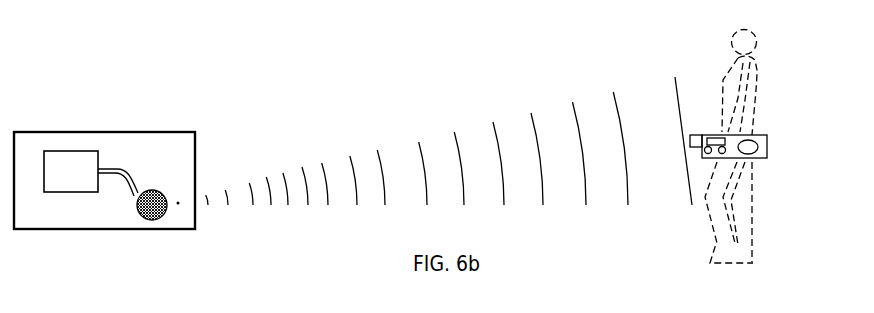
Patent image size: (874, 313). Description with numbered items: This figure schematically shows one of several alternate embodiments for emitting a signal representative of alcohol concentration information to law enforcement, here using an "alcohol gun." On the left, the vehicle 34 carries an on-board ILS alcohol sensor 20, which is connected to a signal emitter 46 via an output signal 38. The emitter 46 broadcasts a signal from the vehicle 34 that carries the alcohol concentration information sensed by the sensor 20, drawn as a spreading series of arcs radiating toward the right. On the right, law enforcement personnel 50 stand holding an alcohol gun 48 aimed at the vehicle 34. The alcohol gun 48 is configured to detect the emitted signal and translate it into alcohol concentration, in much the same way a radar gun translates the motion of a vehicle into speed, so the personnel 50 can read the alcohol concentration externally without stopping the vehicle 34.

The vehicle 34 is at (109, 104).
The on-board ILS alcohol sensor 20 is at (73, 192).
The output signal 38 is at (128, 178).
The signal emitter 46 is at (153, 220).
The alcohol gun 48 is at (767, 142).
The law enforcement personnel 50 is at (722, 83).